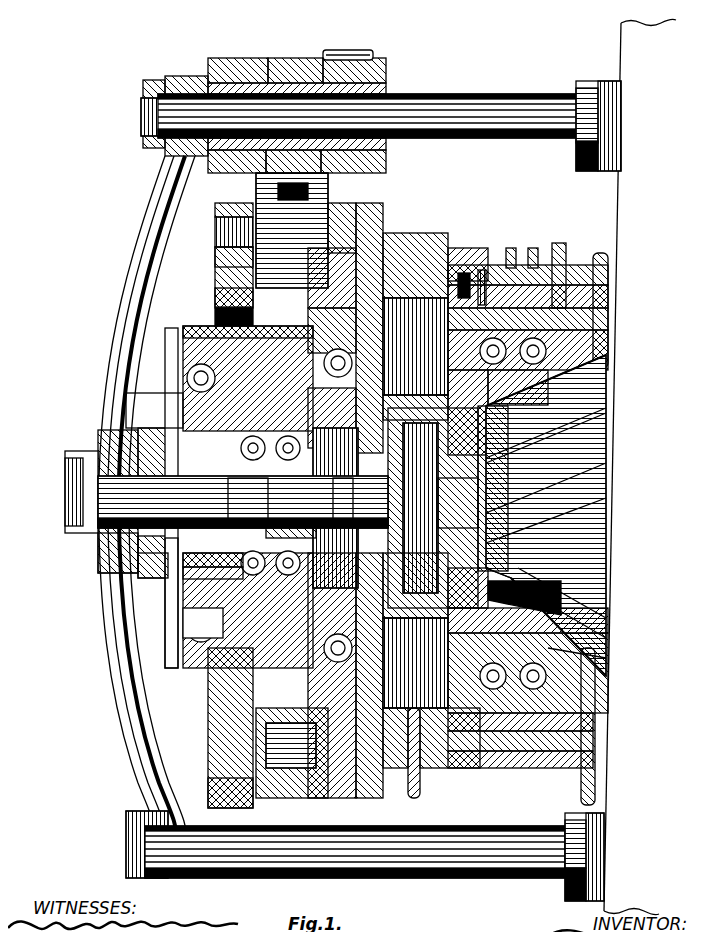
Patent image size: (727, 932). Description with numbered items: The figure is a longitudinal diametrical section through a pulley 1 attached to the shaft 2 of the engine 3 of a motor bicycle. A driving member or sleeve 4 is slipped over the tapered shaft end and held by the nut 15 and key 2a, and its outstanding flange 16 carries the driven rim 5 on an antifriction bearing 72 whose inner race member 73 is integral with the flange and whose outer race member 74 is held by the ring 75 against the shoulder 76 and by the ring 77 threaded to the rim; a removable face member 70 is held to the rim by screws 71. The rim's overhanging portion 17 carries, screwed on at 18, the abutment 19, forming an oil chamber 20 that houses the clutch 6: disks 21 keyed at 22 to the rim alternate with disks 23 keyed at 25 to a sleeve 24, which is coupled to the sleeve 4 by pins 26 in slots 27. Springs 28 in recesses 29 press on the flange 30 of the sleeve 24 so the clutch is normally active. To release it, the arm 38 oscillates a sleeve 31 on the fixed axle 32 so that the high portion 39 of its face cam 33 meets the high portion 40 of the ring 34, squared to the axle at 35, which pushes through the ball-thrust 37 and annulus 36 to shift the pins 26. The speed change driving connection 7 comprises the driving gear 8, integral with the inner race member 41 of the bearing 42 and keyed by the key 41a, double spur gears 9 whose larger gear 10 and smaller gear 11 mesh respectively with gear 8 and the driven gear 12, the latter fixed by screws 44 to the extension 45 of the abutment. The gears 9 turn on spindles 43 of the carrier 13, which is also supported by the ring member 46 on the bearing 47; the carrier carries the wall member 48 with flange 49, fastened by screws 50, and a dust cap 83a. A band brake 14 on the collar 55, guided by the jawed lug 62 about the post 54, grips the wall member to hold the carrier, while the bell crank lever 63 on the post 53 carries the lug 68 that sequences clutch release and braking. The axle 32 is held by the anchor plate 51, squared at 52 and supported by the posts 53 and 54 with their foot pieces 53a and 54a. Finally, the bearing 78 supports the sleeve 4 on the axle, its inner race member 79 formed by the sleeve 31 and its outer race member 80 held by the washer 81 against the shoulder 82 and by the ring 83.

The pulley 1 is at (106, 676).
The shaft 2 is at (433, 508).
The key 2a is at (456, 503).
The engine 3 is at (560, 470).
The driving member or sleeve 4 is at (600, 385).
The driven traction member or rim 5 is at (590, 290).
The clutch 6 is at (437, 245).
The speed change driving connection 7 is at (328, 232).
The driving gear 8 is at (215, 318).
The double spur gears 9 is at (210, 262).
The larger gear 10 is at (212, 250).
The smaller gear 11 is at (348, 235).
The driven gear 12 is at (208, 310).
The carrier 13 is at (205, 238).
The brake 14 is at (262, 202).
The nut 15 is at (575, 480).
The outstanding portion or flange 16 is at (555, 372).
The overhanging portion 17 is at (405, 240).
The screw connection 18 is at (393, 235).
The abutment 19 is at (385, 240).
The oil chamber 20 is at (462, 240).
The clutch disks 21 is at (420, 762).
The keying 22 is at (440, 762).
The second series of disks 23 is at (458, 762).
The sleeve 24 is at (568, 566).
The keying 25 is at (580, 592).
The pins 26 is at (560, 545).
The slots 27 is at (560, 525).
The springs 28 is at (575, 622).
The recesses 29 is at (580, 646).
The flange 30 is at (590, 660).
The sleeve 31 is at (150, 432).
The axle 32 is at (243, 502).
The face cam 33 is at (291, 523).
The ring 34 is at (335, 508).
The squaring 35 is at (354, 502).
The annulus 36 is at (541, 387).
The ball-thrust 37 is at (575, 440).
The arm 38 is at (105, 565).
The high portion of cam 39 is at (288, 502).
The high portion of ring 40 is at (248, 502).
The inner race member 41 is at (175, 395).
The key 41a is at (118, 395).
The antifriction bearing 42 is at (178, 375).
The spindles 43 is at (207, 293).
The screws 44 is at (200, 680).
The extension 45 is at (180, 620).
The ring member 46 is at (355, 240).
The antifriction bearing 47 is at (356, 762).
The wall member 48 is at (318, 233).
The flange 49 is at (320, 780).
The screws 50 is at (212, 212).
The anchor plate 51 is at (100, 378).
The squaring 52 is at (80, 462).
The post 53 is at (432, 100).
The foot piece 53a is at (605, 82).
The post 54 is at (410, 840).
The foot piece 54a is at (590, 832).
The collar 55 is at (295, 62).
The jawed lug 62 is at (205, 790).
The bell crank lever 63 is at (380, 60).
The lug 68 is at (335, 42).
The face member 70 is at (503, 238).
The screws 71 is at (550, 235).
The antifriction bearing 72 is at (525, 240).
The inner race member 73 is at (560, 345).
The outer race member 74 is at (590, 318).
The ring 75 is at (475, 262).
The shoulder 76 is at (455, 262).
The ring 77 is at (595, 300).
The combined radial and thrust bearing 78 is at (178, 572).
The inner race member 79 is at (178, 556).
The outer race member 80 is at (180, 600).
The washer 81 is at (160, 360).
The shoulder 82 is at (180, 345).
The ring 83 is at (157, 580).
The dust cap 83a is at (165, 636).